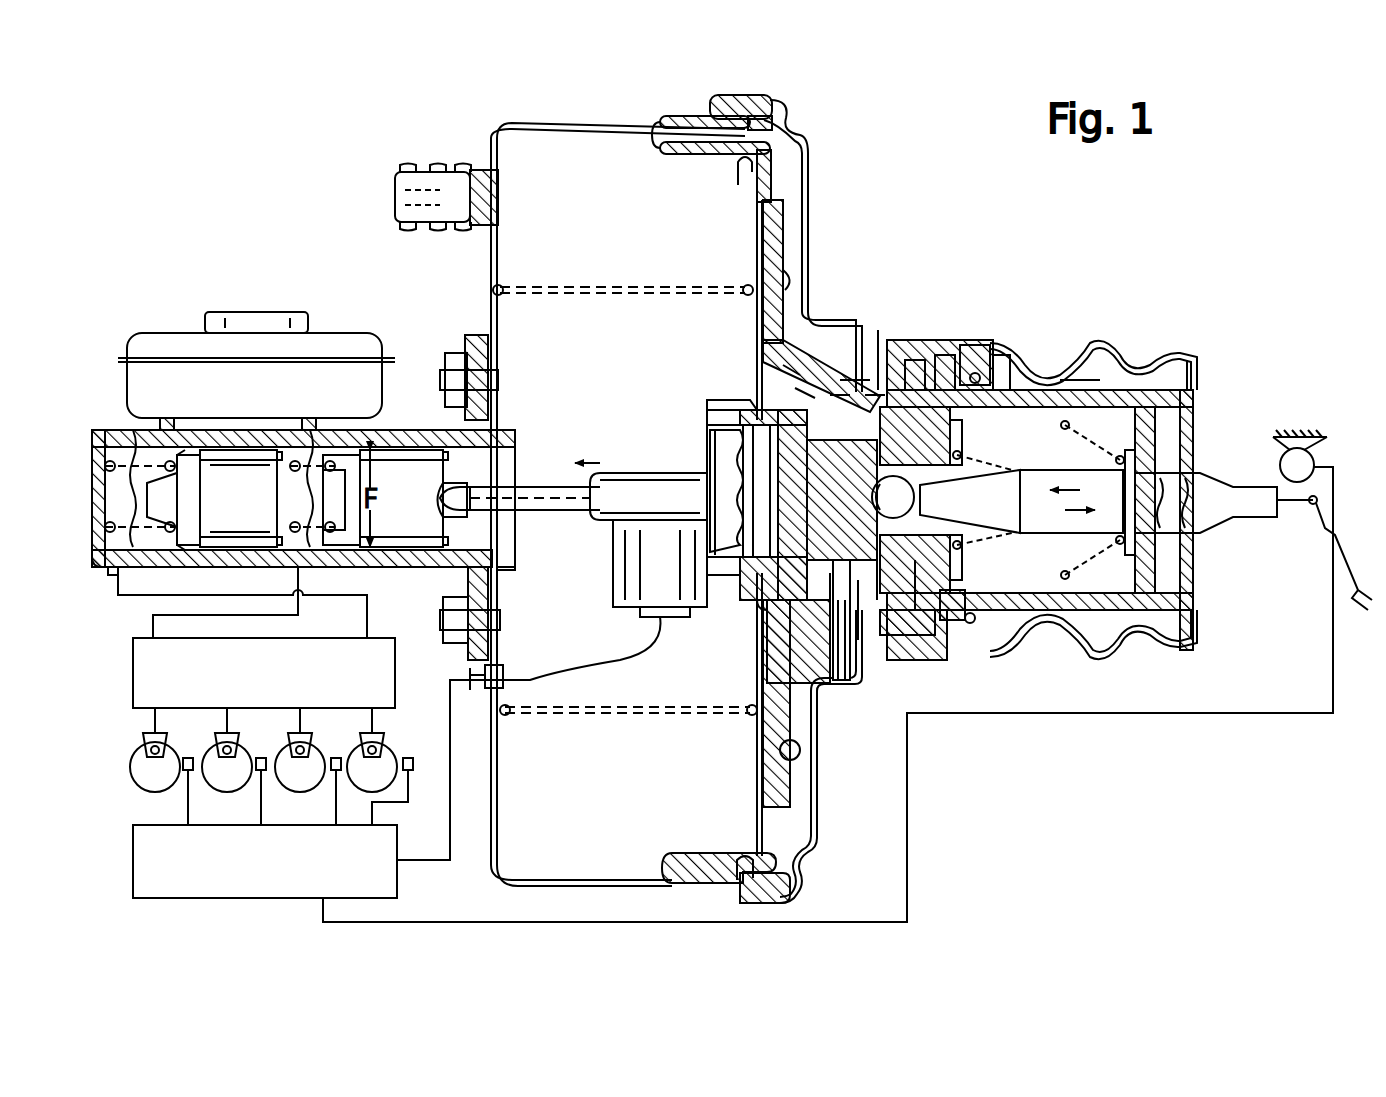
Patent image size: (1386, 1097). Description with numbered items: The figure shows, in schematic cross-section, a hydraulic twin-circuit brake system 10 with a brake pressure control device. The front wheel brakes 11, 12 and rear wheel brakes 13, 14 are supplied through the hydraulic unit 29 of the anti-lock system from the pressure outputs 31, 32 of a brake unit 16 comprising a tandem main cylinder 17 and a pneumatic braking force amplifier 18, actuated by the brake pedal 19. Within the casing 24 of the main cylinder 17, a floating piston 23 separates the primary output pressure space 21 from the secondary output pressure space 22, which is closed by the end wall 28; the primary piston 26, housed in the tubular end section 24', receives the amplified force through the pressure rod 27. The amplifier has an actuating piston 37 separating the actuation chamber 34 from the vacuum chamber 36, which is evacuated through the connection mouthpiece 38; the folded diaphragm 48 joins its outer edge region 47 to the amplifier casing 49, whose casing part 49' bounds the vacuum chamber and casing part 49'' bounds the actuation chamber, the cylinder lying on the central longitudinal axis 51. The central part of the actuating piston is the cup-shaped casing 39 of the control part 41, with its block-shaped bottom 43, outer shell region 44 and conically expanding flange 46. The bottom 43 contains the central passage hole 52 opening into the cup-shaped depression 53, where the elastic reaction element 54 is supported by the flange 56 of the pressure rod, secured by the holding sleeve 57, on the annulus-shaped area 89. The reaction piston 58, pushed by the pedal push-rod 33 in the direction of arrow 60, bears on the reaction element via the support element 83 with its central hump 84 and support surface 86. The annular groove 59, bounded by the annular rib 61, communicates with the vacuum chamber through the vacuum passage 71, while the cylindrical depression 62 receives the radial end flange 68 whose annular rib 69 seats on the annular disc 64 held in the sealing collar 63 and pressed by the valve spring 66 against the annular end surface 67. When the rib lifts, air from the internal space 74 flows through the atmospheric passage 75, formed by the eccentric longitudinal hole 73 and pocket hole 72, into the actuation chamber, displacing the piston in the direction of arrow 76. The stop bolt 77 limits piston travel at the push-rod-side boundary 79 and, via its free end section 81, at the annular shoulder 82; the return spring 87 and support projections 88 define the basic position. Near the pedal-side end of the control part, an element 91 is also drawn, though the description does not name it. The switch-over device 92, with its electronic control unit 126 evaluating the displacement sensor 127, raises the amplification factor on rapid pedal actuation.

The hydraulic twin-circuit brake system 10 is at (190, 166).
The front wheel brake 11 is at (152, 788).
The front wheel brake 12 is at (220, 788).
The rear wheel brake 13 is at (295, 788).
The rear wheel brake 14 is at (367, 788).
The brake unit 16 is at (475, 335).
The tandem main cylinder 17 is at (112, 430).
The pneumatic braking force amplifier 18 is at (485, 125).
The brake pedal 19 is at (1358, 598).
The primary output pressure space 21 is at (345, 545).
The secondary output pressure space 22 is at (100, 578).
The floating piston 23 is at (235, 535).
The casing of the main cylinder 24 is at (214, 524).
The tubular end section 24' is at (525, 582).
The primary piston 26 is at (432, 532).
The pressure rod 27 is at (470, 500).
The end wall 28 is at (98, 492).
The hydraulic unit 29 is at (133, 650).
The pressure output 31 is at (302, 578).
The pressure output 32 is at (118, 590).
The pedal push-rod 33 is at (1200, 515).
The actuation chamber 34 is at (810, 180).
The vacuum chamber 36 is at (640, 140).
The actuating piston 37 is at (800, 212).
The connection mouthpiece 38 is at (402, 180).
The cup-shaped casing of the control part 39 is at (1135, 395).
The control part 41 is at (1100, 380).
The block-shaped bottom 43 is at (800, 393).
The outer shell region 44 is at (1180, 395).
The conically expanding flange 46 is at (790, 370).
The outer edge region 47 is at (745, 175).
The folded diaphragm 48 is at (708, 140).
The braking force amplifier casing 49 is at (722, 96).
The casing part 49' is at (623, 180).
The casing part 49'' is at (863, 151).
The central longitudinal axis 51 is at (545, 487).
The central passage hole 52 is at (878, 395).
The cup-shaped depression 53 is at (855, 385).
The elastic reaction element 54 is at (835, 400).
The flange 56 is at (712, 440).
The holding sleeve 57 is at (765, 418).
The reaction piston 58 is at (870, 400).
The annular groove 59 is at (920, 622).
The arrow 60 is at (1150, 470).
The annular rib 61 is at (950, 632).
The cylindrical cup-shaped depression 62 is at (905, 345).
The sealing collar 63 is at (975, 345).
The annular disc 64 is at (985, 360).
The valve spring 66 is at (1000, 390).
The annular end surface 67 is at (990, 620).
The radial end flange 68 is at (927, 345).
The annular rib 69 is at (950, 350).
The vacuum passage 71 is at (845, 385).
The pocket hole 72 is at (830, 700).
The eccentric longitudinal hole 73 is at (915, 642).
The internal space 74 is at (1105, 615).
The atmospheric passage 75 is at (900, 640).
The arrow 76 is at (615, 473).
The stop bolt 77 is at (842, 645).
The push-rod-side boundary 79 is at (868, 635).
The free end section 81 is at (838, 655).
The annular shoulder 82 is at (855, 655).
The support element 83 is at (740, 470).
The central hump 84 is at (757, 522).
The support surface 86 is at (718, 425).
The return spring 87 is at (725, 700).
The support projections 88 is at (780, 748).
The circular annulus-shaped area 89 is at (765, 630).
The plate 91 is at (1155, 535).
The switch-over device 92 is at (612, 555).
The electronic control unit 126 is at (232, 892).
The displacement sensor 127 is at (1312, 465).